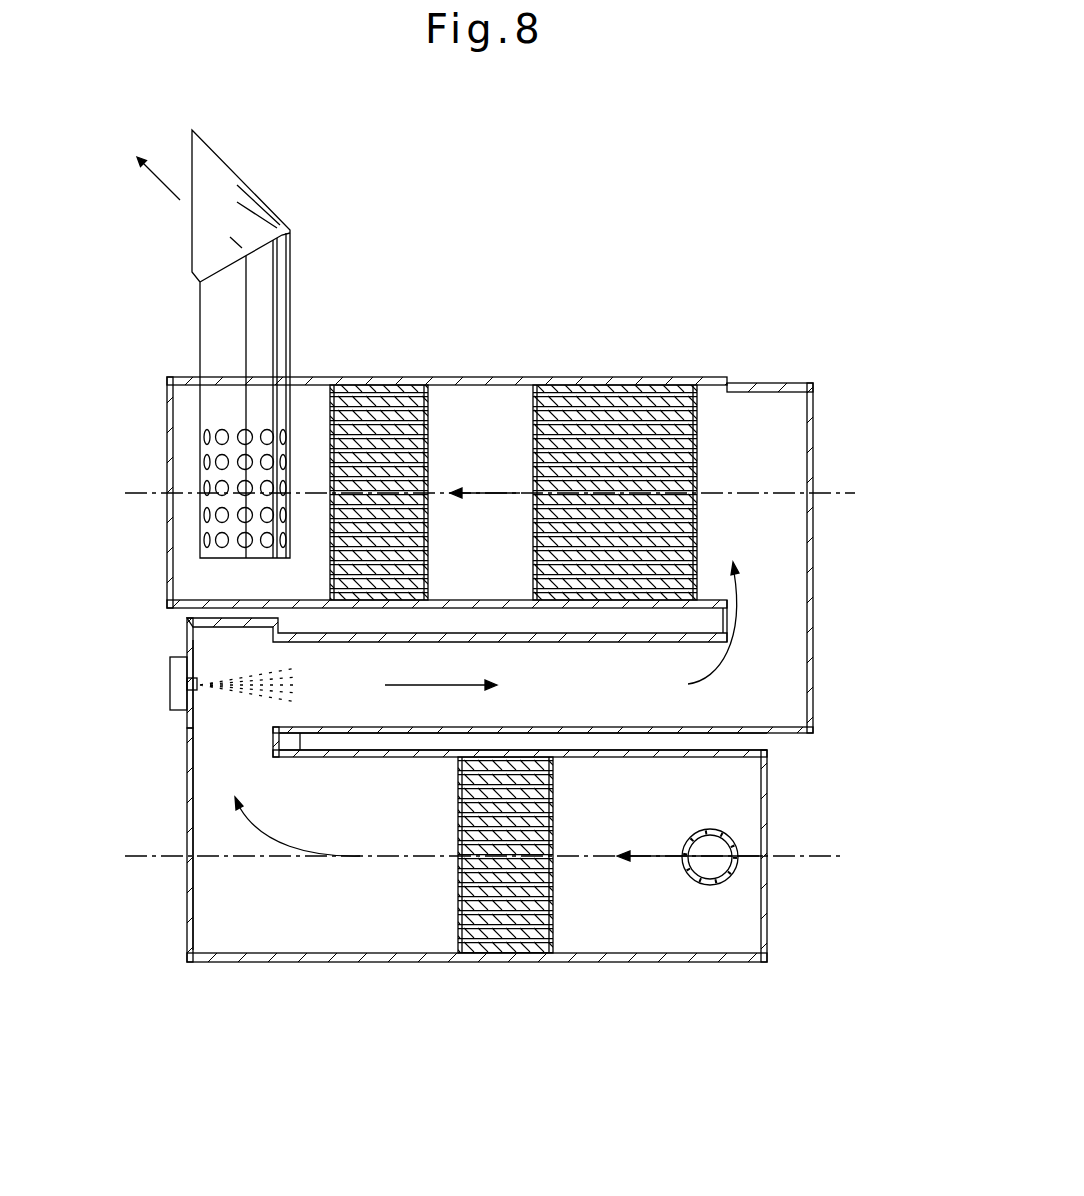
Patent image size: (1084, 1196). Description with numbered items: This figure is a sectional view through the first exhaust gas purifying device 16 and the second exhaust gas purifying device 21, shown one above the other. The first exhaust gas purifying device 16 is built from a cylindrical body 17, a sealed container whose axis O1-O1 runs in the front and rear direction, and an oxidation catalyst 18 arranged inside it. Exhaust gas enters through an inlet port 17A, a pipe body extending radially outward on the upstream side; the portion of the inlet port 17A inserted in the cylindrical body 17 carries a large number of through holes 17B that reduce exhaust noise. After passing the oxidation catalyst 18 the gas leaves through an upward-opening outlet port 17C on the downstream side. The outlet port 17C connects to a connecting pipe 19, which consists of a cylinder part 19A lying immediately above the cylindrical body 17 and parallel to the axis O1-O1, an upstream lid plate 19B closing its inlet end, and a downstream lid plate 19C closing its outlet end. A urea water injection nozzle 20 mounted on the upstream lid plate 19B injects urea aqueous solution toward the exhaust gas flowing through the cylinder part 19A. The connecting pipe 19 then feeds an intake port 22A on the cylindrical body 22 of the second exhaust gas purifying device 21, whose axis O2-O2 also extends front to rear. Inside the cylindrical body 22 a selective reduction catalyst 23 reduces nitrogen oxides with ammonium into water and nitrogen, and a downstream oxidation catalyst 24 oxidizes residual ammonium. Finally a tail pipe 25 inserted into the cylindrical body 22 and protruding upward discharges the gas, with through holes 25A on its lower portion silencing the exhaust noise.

The first exhaust gas purifying device 16 is at (178, 912).
The cylindrical body 17 is at (322, 962).
The inlet port 17A is at (712, 830).
The through holes 17B is at (733, 868).
The outlet port 17C is at (228, 740).
The oxidation catalyst 18 is at (505, 907).
The connecting pipe 19 is at (813, 670).
The cylinder part 19A is at (360, 735).
The upstream lid plate 19B is at (190, 647).
The downstream lid plate 19C is at (812, 708).
The urea water injection nozzle 20 is at (178, 685).
The second exhaust gas purifying device 21 is at (484, 368).
The cylindrical body 22 is at (680, 383).
The intake port 22A is at (775, 614).
The selective reduction catalyst 23 is at (614, 427).
The oxidation catalyst 24 is at (380, 433).
The tail pipe 25 is at (223, 220).
The through holes 25A is at (222, 437).
The axis O1 is at (474, 839).
The axis O2 is at (494, 478).